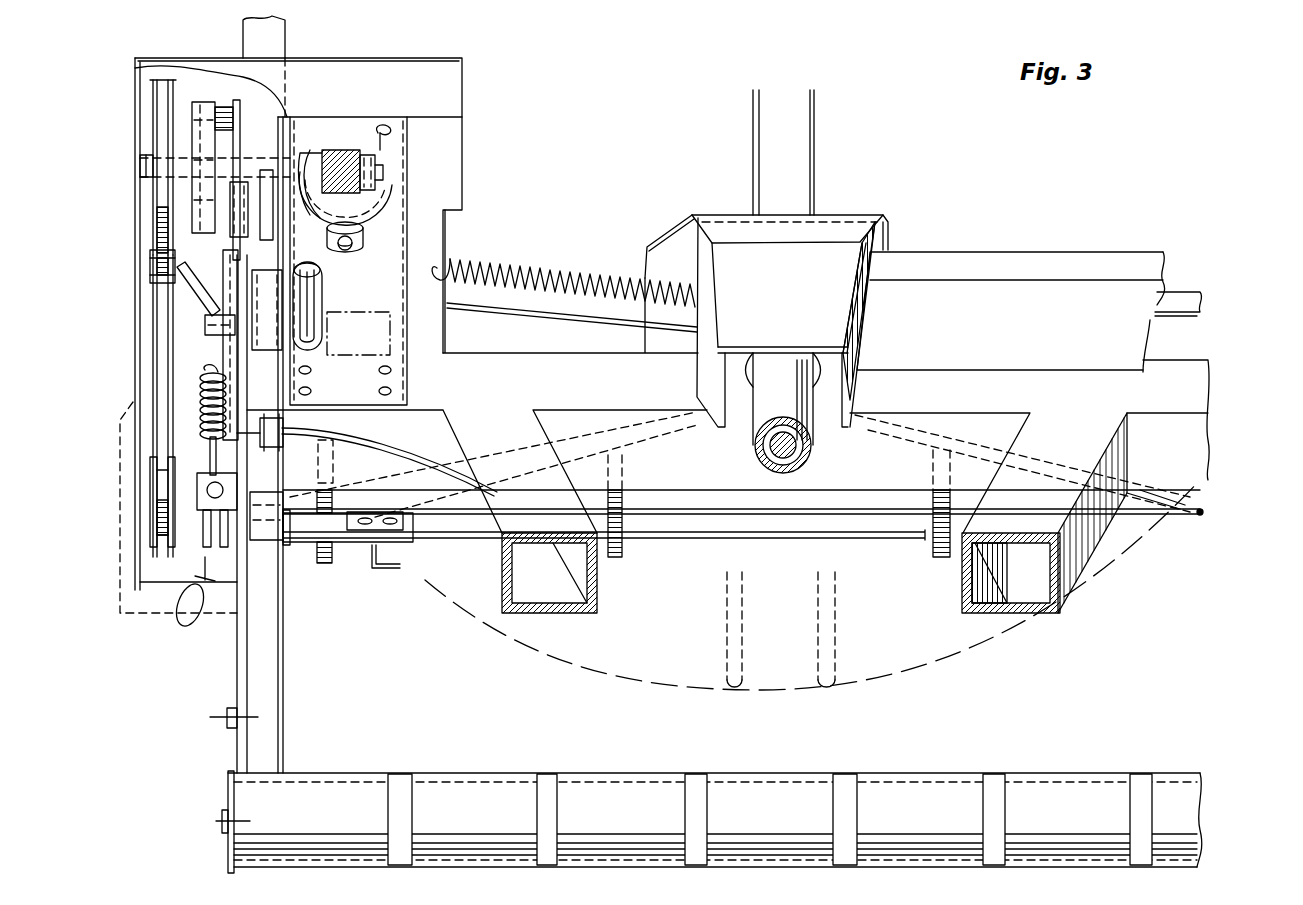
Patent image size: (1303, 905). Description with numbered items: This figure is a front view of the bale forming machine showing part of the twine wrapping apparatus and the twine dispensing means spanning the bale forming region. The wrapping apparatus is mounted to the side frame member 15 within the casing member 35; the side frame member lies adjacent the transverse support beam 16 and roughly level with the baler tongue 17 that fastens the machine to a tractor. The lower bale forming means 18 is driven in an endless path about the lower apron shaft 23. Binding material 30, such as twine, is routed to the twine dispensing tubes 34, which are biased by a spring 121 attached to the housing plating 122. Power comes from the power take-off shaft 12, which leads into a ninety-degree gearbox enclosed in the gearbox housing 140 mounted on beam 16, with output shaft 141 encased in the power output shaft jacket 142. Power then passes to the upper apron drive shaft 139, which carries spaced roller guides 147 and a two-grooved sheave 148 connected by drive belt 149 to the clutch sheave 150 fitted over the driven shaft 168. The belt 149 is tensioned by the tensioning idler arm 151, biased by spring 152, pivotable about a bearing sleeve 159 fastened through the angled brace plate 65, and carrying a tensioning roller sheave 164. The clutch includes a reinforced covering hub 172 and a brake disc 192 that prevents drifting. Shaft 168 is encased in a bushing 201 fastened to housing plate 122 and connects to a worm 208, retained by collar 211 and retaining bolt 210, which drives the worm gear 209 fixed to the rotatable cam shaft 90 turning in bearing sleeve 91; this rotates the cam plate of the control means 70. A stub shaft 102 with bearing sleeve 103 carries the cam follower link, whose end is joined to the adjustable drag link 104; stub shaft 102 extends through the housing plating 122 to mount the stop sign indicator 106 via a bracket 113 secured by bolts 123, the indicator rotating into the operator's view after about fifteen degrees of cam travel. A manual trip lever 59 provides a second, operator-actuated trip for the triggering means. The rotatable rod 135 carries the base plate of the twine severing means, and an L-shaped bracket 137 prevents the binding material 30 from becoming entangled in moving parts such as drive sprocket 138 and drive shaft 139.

The power take-off shaft 12 is at (805, 460).
The side frame member 15 is at (237, 743).
The transverse support beam 16 is at (1208, 392).
The baler tongue 17 is at (563, 615).
The lower bale forming means 18 is at (476, 770).
The lower apron shaft 23 is at (222, 820).
The binding material 30 is at (753, 107).
The twine dispensing tubes 34 is at (643, 440).
The casing member 35 is at (133, 208).
The manually activated lever 59 is at (182, 630).
The angled brace plate 65 is at (222, 253).
The control means 70 is at (375, 44).
The rotatable cam shaft 90 is at (350, 250).
The bearing sleeve 91 is at (363, 231).
The stub shaft 102 is at (317, 297).
The bearing sleeve 103 is at (325, 272).
The drag link 104 is at (523, 318).
The stop sign indicator 106 is at (397, 323).
The bracket 113 is at (332, 338).
The spring 121 is at (547, 267).
The housing plating 122 is at (410, 116).
The bolts 123 is at (327, 328).
The rotatable rod 135 is at (830, 538).
The L-shaped bracket 137 is at (383, 570).
The drive sprocket 138 is at (330, 563).
The upper apron drive shaft 139 is at (1203, 511).
The gearbox housing 140 is at (863, 216).
The output shaft 141 is at (1180, 290).
The power output shaft jacket 142 is at (1092, 255).
The roller guides 147 is at (623, 557).
The sheave 148 is at (150, 483).
The drive belt 149 is at (153, 447).
The clutch sheave 150 is at (153, 94).
The tensioning idler arm 151 is at (183, 295).
The spring 152 is at (200, 413).
The bearing sleeve 159 is at (210, 330).
The tensioning roller sheave 164 is at (153, 276).
The driven shaft 168 is at (140, 160).
The reinforced covering hub 172 is at (217, 102).
The brake disc 192 is at (243, 107).
The bushing 201 is at (305, 152).
The worm 208 is at (347, 150).
The worm gear 209 is at (392, 196).
The retaining bolt 210 is at (390, 134).
The collar 211 is at (383, 149).